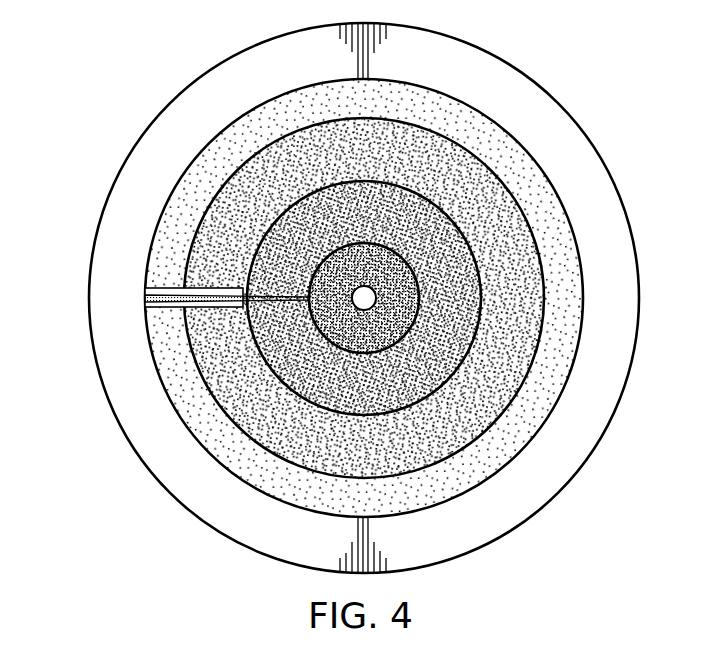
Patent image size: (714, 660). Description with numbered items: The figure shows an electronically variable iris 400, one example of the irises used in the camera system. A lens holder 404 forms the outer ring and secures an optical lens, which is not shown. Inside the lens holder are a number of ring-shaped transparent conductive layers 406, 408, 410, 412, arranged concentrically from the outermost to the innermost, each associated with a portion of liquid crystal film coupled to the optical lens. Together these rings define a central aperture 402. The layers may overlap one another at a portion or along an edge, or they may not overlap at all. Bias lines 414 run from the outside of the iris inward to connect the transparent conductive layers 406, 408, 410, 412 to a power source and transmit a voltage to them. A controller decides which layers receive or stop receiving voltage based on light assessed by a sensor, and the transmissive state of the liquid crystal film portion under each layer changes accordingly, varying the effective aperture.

The electronically variable iris 400 is at (167, 69).
The aperture 402 is at (365, 296).
The lens holder 404 is at (565, 122).
The transparent conductive layer 406 is at (482, 128).
The transparent conductive layer 408 is at (382, 460).
The transparent conductive layer 410 is at (382, 395).
The transparent conductive layer 412 is at (342, 257).
The bias lines 414 is at (145, 297).